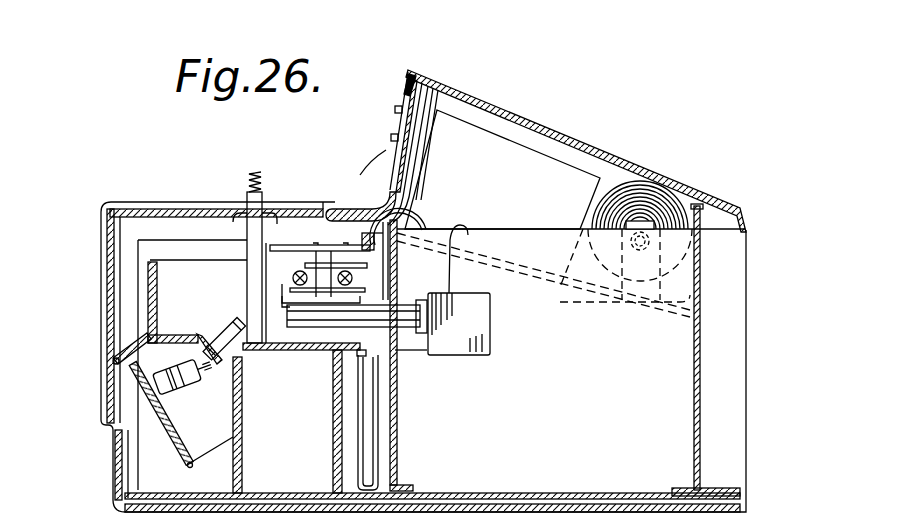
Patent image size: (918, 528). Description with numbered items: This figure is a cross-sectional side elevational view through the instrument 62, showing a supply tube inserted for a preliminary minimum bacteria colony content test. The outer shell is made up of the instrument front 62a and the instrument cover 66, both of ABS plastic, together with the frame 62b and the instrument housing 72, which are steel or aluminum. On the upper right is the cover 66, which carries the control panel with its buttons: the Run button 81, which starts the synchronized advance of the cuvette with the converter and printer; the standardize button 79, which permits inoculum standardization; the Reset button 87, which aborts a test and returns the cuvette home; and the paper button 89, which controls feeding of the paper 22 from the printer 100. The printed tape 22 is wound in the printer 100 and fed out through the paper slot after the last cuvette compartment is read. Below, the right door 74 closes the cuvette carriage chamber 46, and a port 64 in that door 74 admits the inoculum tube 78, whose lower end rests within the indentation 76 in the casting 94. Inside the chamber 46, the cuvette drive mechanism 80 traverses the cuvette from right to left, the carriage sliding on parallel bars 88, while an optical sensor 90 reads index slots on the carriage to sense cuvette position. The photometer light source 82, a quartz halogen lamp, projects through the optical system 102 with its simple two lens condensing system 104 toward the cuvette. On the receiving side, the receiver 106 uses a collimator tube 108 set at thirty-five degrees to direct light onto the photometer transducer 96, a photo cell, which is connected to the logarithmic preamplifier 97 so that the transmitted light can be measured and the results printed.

The instrument 62 is at (601, 141).
The instrument front 62a is at (110, 465).
The frame 62b is at (672, 443).
The instrument cover 66 is at (405, 66).
The instrument housing 72 is at (405, 97).
The right door 74 is at (186, 210).
The inoculum tube 78 is at (248, 197).
The port 64 is at (263, 206).
The cuvette drive mechanism 80 is at (311, 249).
The Run button 81 is at (396, 110).
The Reset button 87 is at (392, 138).
The printed tape 22 is at (388, 150).
The standardize button 79 is at (386, 160).
The paper button 89 is at (376, 184).
The printer 100 is at (530, 189).
The parallel bars 88 is at (296, 279).
The optical sensor 90 is at (373, 242).
The casting 94 is at (173, 335).
The receiver 106 is at (244, 320).
The photometer transducer 96 is at (183, 392).
The logarithmic preamplifier 97 is at (171, 446).
The indentation 76 is at (266, 351).
The cuvette carriage chamber 46 is at (318, 292).
The collimator tube 108 is at (227, 362).
The optical system 102 is at (335, 342).
The two lens condensing system 104 is at (408, 328).
The photometer light source 82 is at (478, 332).